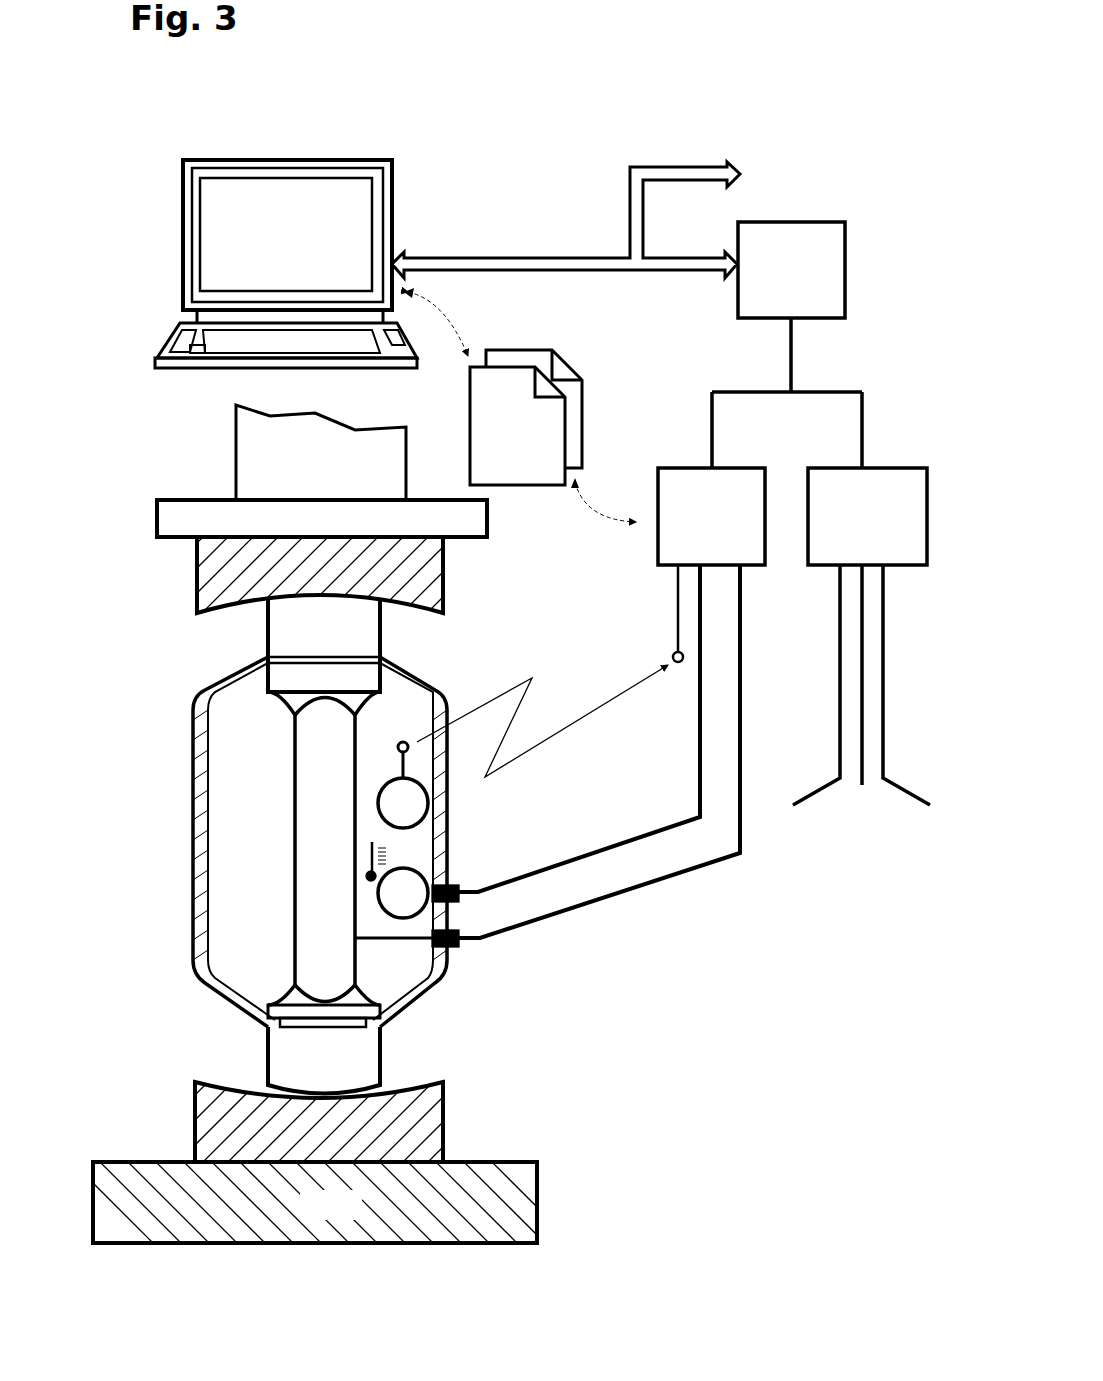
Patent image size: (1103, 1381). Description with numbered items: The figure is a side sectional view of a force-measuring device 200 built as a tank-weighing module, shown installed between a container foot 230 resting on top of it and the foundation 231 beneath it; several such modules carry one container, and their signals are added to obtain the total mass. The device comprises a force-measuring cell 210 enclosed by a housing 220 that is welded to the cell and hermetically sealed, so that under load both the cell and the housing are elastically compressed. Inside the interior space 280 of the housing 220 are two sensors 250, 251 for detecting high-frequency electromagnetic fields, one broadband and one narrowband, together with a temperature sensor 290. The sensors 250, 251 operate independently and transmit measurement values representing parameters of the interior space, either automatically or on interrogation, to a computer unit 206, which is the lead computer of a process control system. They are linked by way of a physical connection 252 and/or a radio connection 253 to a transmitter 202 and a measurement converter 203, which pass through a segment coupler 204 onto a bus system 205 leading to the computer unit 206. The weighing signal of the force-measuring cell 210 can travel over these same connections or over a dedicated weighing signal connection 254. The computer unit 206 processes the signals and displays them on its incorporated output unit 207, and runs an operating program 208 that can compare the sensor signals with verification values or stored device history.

The force-measuring device 200 is at (498, 1015).
The transmitter 202 is at (711, 516).
The measurement converter 203 is at (861, 636).
The segment coupler 204 is at (791, 270).
The bus system 205 is at (545, 258).
The computer unit 206 is at (304, 150).
The output unit 207 is at (220, 222).
The operating program 208 is at (520, 405).
The force-measuring cell 210 is at (322, 808).
The housing 220 is at (205, 880).
The container foot 230 is at (321, 452).
The foundation 231 is at (325, 1205).
The sensor 250 is at (429, 805).
The sensor 251 is at (460, 858).
The physical connection 252 is at (648, 833).
The radio connection 253 is at (590, 715).
The weighing signal connection 254 is at (672, 880).
The interior space 280 is at (245, 897).
The temperature sensor 290 is at (372, 862).